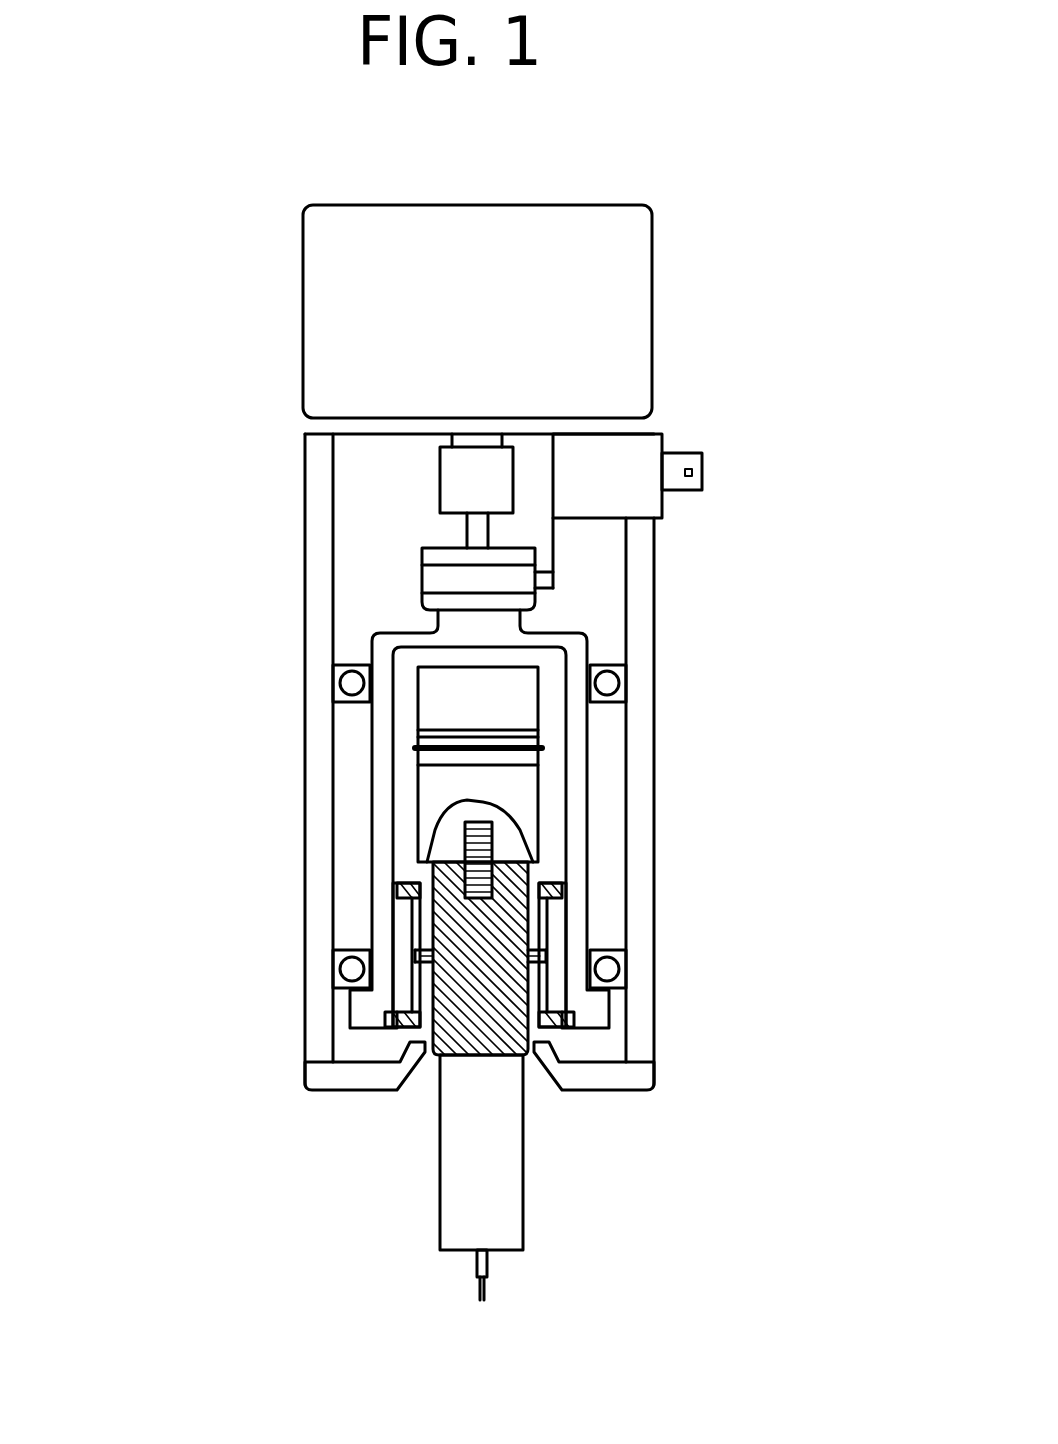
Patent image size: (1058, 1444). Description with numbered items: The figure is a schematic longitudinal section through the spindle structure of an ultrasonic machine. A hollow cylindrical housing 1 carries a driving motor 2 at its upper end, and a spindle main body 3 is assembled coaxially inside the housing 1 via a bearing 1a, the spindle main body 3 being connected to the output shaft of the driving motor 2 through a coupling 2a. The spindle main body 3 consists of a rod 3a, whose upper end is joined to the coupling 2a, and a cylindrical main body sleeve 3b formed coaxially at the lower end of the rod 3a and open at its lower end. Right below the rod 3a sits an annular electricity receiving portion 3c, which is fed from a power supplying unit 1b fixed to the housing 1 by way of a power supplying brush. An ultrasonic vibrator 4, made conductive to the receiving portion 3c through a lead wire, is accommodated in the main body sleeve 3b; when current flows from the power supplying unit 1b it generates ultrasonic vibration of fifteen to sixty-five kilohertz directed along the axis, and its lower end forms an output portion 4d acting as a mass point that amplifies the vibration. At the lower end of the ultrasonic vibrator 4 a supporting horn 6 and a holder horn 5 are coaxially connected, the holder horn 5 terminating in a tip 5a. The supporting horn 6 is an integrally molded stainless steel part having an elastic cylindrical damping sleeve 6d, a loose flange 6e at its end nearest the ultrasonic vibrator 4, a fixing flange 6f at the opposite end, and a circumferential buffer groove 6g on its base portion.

The hollow cylindrical housing 1 is at (640, 558).
The bearing 1a is at (333, 670).
The power supplying unit 1b is at (645, 448).
The driving motor 2 is at (630, 265).
The coupling 2a is at (453, 470).
The spindle main body 3 is at (594, 782).
The rod 3a is at (470, 532).
The cylindrical main body sleeve 3b is at (582, 742).
The annular electricity receiving portion 3c is at (437, 580).
The ultrasonic vibrator 4 is at (404, 802).
The output portion 4d is at (428, 825).
The holder horn 5 is at (463, 1175).
The nozzle tip 5a is at (480, 1293).
The supporting horn 6 is at (400, 920).
The elastic cylindrical damping sleeve 6d is at (567, 918).
The loose flange 6e is at (556, 886).
The fixing flange 6f is at (570, 1027).
The buffer groove 6g is at (570, 952).